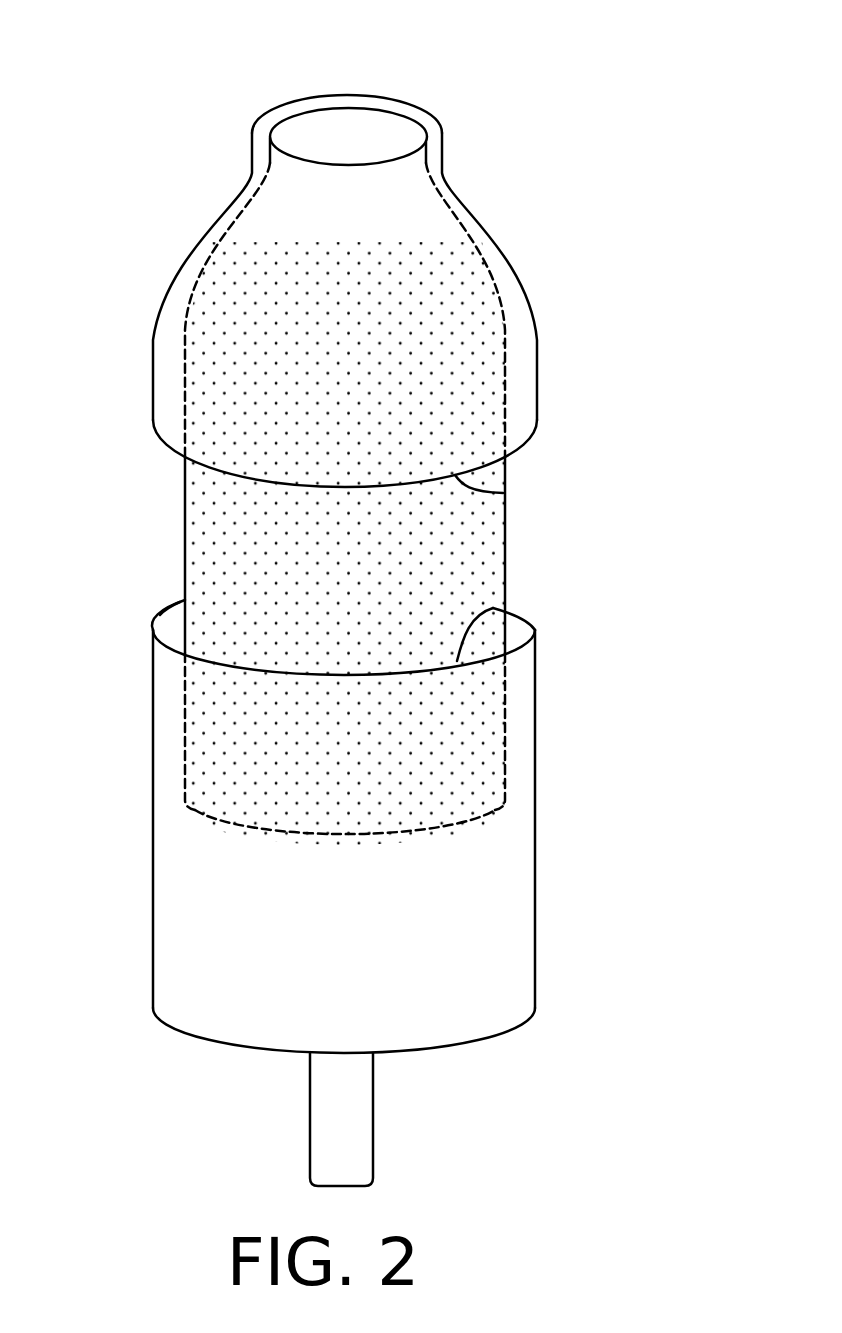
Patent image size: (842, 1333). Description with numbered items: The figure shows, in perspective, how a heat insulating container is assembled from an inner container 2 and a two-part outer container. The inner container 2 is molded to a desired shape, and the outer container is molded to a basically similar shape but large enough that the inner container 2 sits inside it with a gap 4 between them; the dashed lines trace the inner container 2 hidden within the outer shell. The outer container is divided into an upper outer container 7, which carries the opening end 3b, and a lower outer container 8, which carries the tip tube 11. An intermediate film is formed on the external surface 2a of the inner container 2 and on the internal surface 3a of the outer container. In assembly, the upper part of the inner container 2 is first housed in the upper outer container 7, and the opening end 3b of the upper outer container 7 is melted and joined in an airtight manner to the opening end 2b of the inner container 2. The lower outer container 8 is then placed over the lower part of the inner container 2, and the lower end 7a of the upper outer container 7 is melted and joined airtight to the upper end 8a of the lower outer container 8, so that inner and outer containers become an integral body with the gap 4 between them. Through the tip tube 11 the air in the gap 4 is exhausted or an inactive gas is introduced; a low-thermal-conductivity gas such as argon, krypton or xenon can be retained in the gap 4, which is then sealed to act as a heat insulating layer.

The inner container 2 is at (507, 517).
The external surface of the inner container 2a is at (463, 545).
The opening end of the inner container 2b is at (358, 108).
The internal surface of the outer container 3a is at (170, 622).
The opening end of the upper outer container 3b is at (417, 105).
The gap 4 is at (520, 373).
The upper outer container 7 is at (528, 293).
The lower end of the upper outer container 7a is at (510, 490).
The lower outer container 8 is at (535, 740).
The upper end of the lower outer container 8a is at (532, 622).
The tip tube 11 is at (373, 1148).